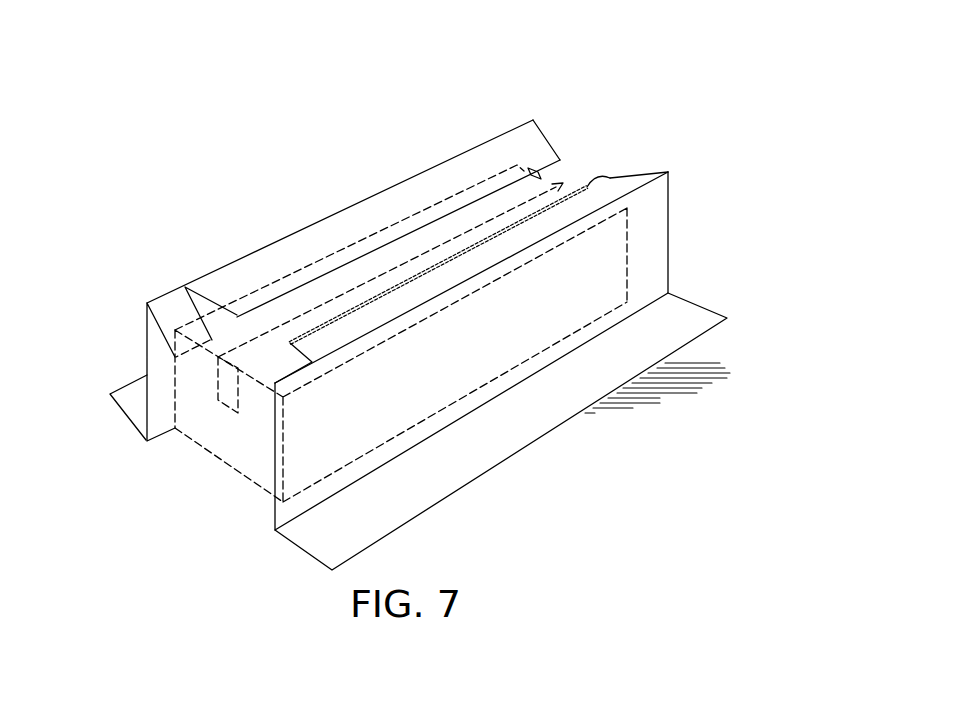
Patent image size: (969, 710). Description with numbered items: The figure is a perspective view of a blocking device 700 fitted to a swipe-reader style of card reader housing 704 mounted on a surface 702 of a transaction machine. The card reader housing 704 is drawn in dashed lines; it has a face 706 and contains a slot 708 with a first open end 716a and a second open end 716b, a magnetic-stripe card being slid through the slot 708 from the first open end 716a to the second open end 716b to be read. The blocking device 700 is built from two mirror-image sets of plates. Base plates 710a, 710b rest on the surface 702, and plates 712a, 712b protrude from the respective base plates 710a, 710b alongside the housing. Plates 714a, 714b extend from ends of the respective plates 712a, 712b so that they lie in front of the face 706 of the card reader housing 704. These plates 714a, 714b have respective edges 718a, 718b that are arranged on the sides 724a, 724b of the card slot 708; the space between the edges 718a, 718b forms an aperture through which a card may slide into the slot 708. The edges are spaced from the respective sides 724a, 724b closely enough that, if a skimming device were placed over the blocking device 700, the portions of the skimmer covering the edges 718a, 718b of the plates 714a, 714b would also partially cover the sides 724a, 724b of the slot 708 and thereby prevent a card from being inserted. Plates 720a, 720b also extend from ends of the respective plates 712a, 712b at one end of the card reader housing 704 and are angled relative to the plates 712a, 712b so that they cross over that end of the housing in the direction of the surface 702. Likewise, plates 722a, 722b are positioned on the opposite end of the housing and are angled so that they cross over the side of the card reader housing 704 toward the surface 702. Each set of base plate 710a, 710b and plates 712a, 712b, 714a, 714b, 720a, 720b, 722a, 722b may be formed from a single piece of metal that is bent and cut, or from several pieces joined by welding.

The blocking device 700 is at (740, 101).
The surface 702 is at (652, 551).
The card reader housing 704 is at (135, 496).
The face 706 is at (256, 374).
The slot 708 is at (422, 263).
The base plate 710a is at (527, 431).
The base plate 710b is at (125, 400).
The plate 712a is at (657, 230).
The plate 712b is at (155, 346).
The plate 714a is at (618, 180).
The plate 714b is at (337, 213).
The first open end 716a is at (571, 190).
The second open end 716b is at (218, 395).
The edge 718a is at (590, 186).
The edge 718b is at (468, 203).
The plate 720a is at (313, 372).
The plate 720b is at (173, 308).
The plate 722a is at (645, 180).
The plate 722b is at (539, 138).
The side of the card slot 724a is at (537, 217).
The side of the card slot 724b is at (332, 292).